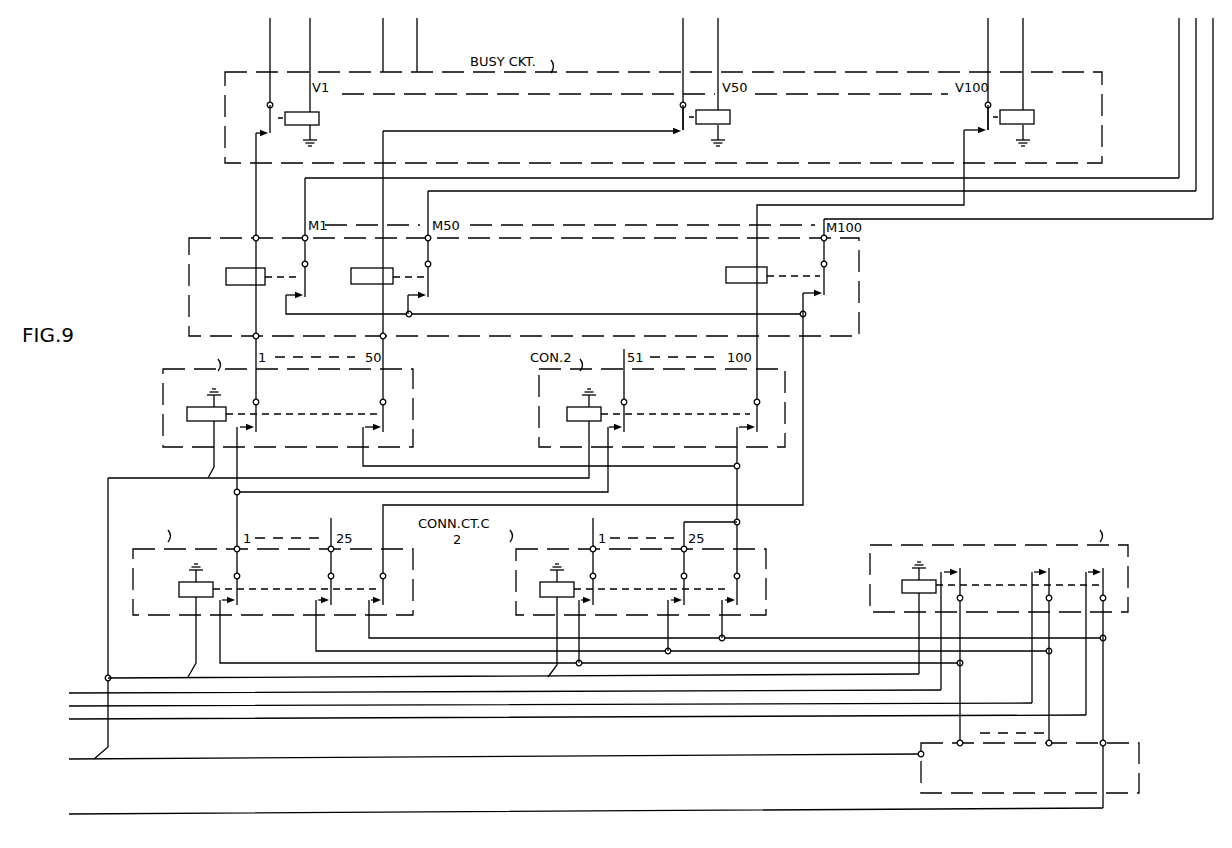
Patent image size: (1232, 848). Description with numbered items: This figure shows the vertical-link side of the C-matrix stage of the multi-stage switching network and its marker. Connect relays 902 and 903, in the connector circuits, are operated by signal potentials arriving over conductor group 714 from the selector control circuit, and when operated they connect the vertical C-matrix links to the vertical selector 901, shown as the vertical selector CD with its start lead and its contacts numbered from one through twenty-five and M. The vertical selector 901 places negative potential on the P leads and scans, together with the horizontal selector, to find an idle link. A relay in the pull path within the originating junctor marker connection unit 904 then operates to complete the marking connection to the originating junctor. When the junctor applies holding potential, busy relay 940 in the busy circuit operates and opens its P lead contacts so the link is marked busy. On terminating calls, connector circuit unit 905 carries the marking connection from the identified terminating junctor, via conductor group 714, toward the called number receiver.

The busy relay 940 is at (319, 122).
The originating junctor marker connection unit 904 is at (524, 287).
The connect relay 903 is at (288, 414).
The connect relay 902 is at (264, 596).
The connector circuit unit 905 is at (999, 597).
The vertical selector 901 is at (1028, 759).
The conductor group 714 is at (88, 757).